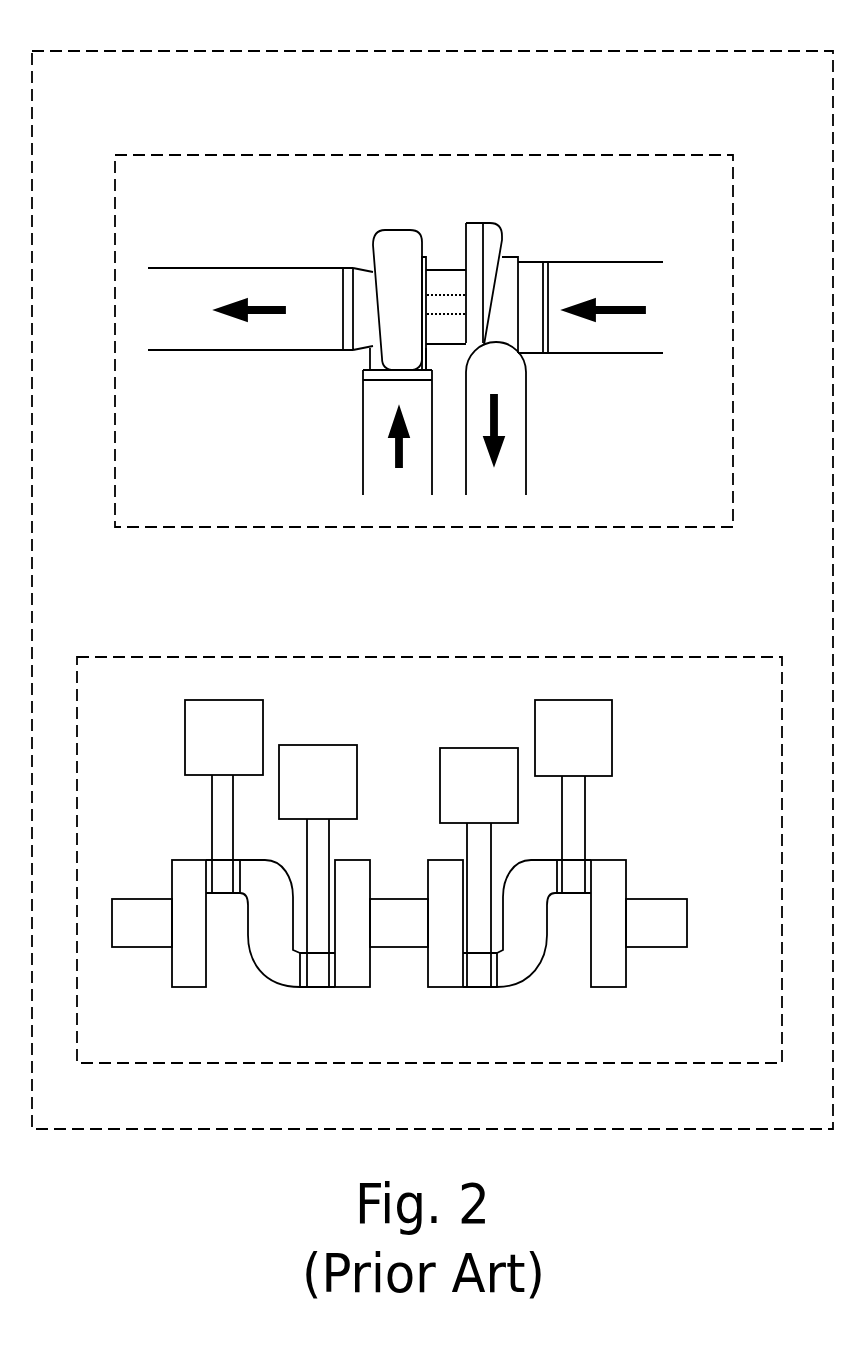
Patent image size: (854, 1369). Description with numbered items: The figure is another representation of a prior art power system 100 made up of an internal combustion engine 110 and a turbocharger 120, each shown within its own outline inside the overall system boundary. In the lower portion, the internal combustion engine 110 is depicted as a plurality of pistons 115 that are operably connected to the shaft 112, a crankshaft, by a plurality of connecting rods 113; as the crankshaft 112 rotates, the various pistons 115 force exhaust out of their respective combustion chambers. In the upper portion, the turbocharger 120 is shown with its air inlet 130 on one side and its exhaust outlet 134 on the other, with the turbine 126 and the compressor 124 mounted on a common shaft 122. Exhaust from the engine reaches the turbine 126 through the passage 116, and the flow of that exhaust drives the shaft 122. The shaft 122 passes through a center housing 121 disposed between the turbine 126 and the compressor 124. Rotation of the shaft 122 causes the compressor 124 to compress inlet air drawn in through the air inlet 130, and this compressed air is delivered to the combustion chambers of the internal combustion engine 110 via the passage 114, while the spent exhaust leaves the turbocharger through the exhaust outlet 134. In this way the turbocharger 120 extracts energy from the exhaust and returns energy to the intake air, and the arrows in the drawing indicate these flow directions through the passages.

The power system 100 is at (680, 51).
The internal combustion engine 110 is at (656, 657).
The shaft 112 is at (667, 897).
The connecting rods 113 is at (587, 823).
The pistons 115 is at (613, 733).
The turbocharger 120 is at (627, 155).
The center housing 121 is at (438, 268).
The shaft 122 is at (443, 293).
The compressor stage 124 is at (502, 253).
The turbine stage 126 is at (382, 231).
The air inlet 130 is at (620, 262).
The exhaust outlet 134 is at (202, 268).
The exhaust port 116 is at (362, 450).
The intake port 114 is at (527, 448).